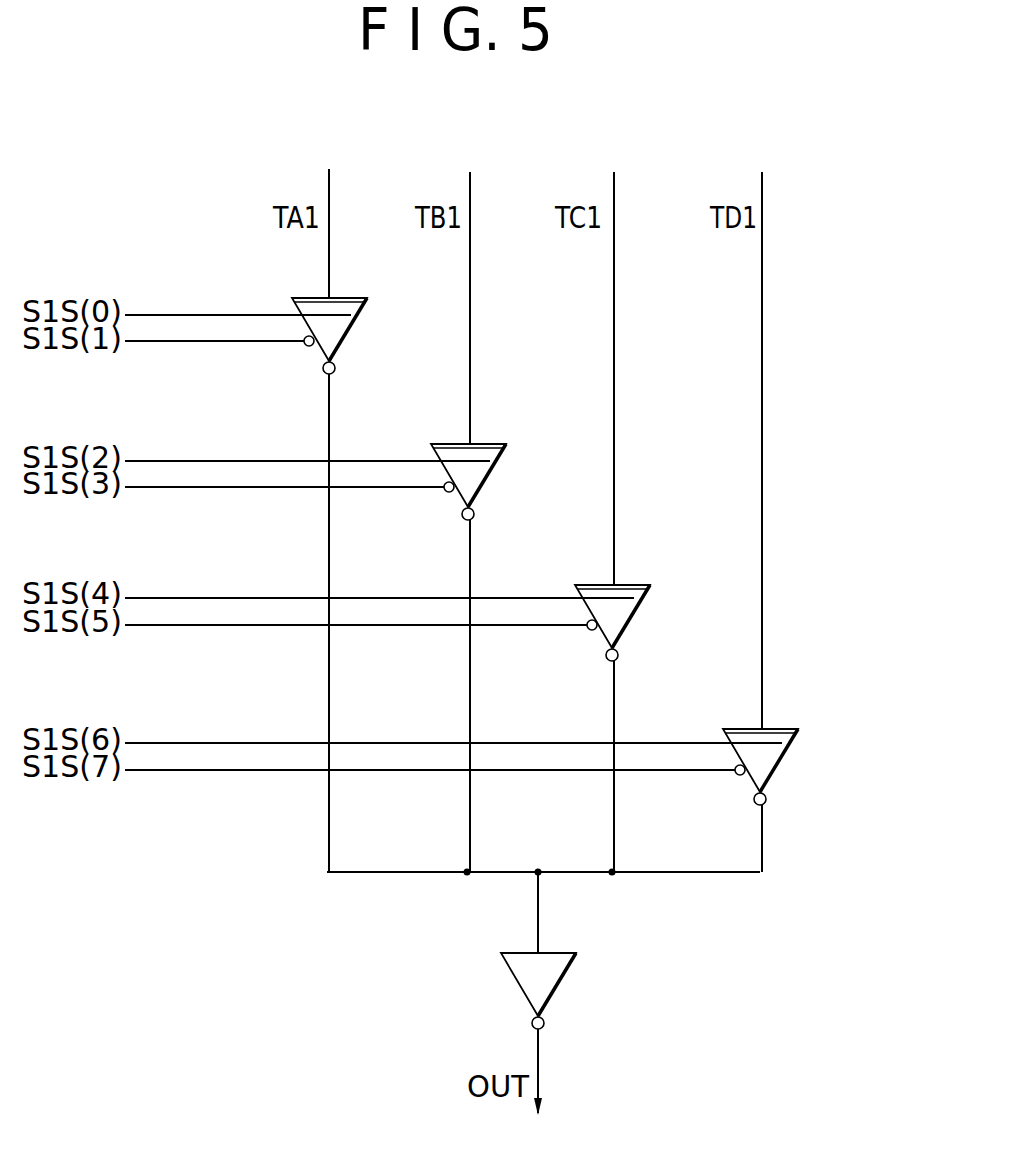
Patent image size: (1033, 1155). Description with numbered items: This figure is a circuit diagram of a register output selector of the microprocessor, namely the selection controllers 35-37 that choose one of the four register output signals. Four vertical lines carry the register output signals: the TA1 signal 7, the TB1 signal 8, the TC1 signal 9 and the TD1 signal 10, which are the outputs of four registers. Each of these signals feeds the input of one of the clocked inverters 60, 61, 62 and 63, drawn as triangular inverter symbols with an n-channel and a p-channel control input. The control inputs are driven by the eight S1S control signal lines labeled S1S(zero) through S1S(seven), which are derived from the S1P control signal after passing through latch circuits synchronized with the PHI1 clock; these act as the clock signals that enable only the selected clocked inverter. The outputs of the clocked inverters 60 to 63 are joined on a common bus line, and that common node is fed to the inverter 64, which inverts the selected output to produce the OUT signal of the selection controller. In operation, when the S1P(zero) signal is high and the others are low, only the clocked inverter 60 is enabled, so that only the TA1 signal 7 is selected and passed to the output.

The TA1 signal 7 is at (330, 194).
The TB1 signal 8 is at (471, 198).
The TC1 signal 9 is at (615, 198).
The TD1 signal 10 is at (763, 198).
The selection controllers 35-37 is at (886, 368).
The clocked inverter 60 is at (345, 298).
The clocked inverter 61 is at (485, 444).
The clocked inverter 62 is at (628, 585).
The clocked inverter 63 is at (780, 729).
The inverter 64 is at (536, 1042).